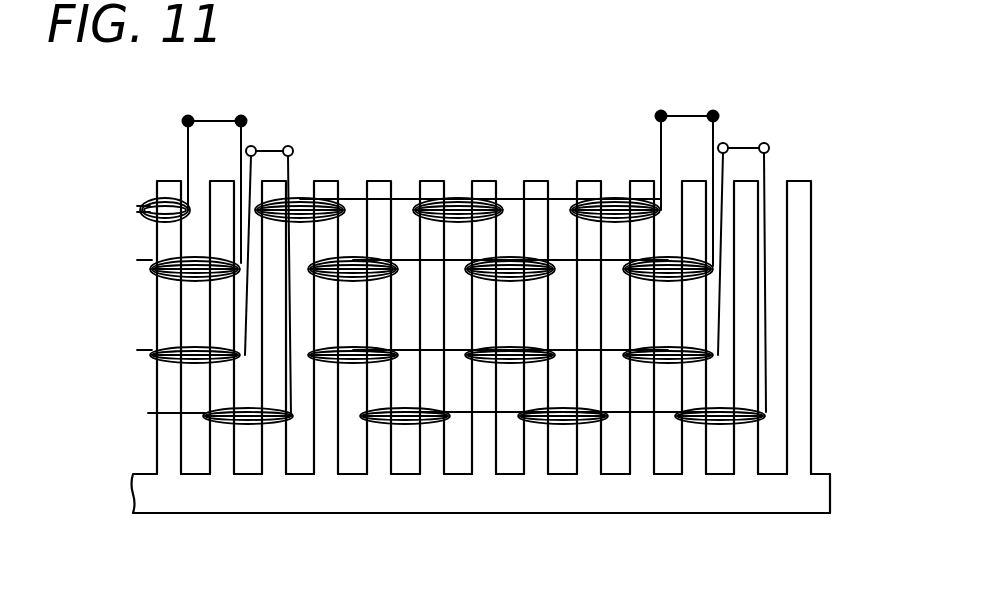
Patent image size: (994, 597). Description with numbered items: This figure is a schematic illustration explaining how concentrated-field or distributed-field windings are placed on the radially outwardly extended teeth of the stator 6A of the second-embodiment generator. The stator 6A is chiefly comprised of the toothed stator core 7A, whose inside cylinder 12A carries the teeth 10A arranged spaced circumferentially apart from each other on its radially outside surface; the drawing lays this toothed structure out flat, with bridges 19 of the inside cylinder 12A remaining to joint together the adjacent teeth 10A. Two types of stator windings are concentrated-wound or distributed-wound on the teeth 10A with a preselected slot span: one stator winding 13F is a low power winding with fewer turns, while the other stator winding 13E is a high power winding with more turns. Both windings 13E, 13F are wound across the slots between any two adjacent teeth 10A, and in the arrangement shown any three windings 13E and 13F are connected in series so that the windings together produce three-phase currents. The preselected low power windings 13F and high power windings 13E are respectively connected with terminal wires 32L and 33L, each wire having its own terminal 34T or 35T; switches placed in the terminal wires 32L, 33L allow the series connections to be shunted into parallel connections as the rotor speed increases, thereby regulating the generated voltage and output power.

The stator 6A is at (822, 176).
The toothed stator core 7A is at (462, 512).
The teeth 10A is at (428, 243).
The inside cylinder 12A is at (675, 495).
The high power winding 13E is at (613, 207).
The low power winding 13F is at (347, 355).
The bridges 19 is at (270, 490).
The terminal wire 32L is at (187, 145).
The terminal wire 33L is at (292, 167).
The terminal 34T is at (188, 117).
The terminal 35T is at (254, 147).